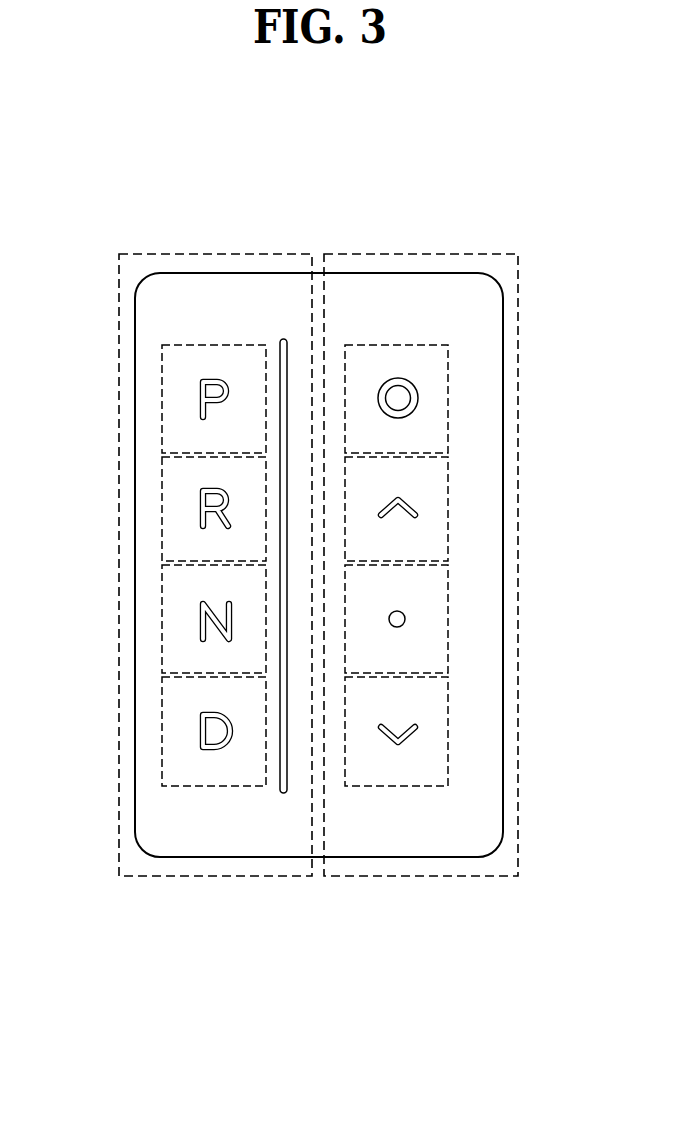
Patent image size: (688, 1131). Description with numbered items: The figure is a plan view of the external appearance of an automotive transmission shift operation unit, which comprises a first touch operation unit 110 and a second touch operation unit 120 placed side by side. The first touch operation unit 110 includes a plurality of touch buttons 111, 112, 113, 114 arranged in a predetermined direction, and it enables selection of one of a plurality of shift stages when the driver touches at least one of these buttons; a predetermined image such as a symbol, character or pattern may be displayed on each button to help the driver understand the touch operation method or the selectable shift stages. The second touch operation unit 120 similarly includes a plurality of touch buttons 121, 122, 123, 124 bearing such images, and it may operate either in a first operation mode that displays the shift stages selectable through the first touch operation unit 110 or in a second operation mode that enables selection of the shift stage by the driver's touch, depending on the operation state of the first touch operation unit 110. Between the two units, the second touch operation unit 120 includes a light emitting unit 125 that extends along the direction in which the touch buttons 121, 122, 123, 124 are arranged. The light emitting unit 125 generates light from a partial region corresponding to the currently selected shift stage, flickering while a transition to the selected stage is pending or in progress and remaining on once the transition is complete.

The first touch operation unit 110 is at (448, 254).
The touch button 111 is at (449, 398).
The touch button 112 is at (449, 508).
The touch button 113 is at (449, 619).
The touch button 114 is at (449, 729).
The second touch operation unit 120 is at (228, 254).
The touch button 121 is at (162, 401).
The touch button 122 is at (162, 512).
The touch button 123 is at (162, 623).
The touch button 124 is at (162, 733).
The light emitting unit 125 is at (283, 777).